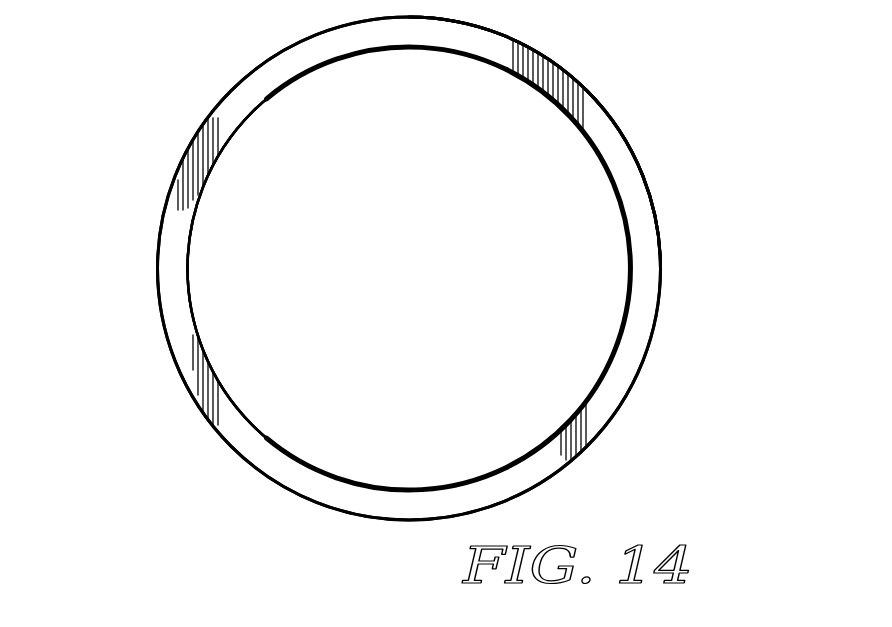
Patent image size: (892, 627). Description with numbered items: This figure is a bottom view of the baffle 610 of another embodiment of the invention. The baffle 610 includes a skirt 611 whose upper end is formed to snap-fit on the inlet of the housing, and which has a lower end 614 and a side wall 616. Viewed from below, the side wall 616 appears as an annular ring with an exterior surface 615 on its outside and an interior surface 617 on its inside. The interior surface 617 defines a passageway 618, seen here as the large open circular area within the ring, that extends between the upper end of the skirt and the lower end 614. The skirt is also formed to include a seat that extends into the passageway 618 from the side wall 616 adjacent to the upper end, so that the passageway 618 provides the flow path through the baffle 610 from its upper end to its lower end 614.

The baffle 610 is at (158, 190).
The skirt 611 is at (193, 408).
The lower end 614 is at (648, 350).
The exterior surface 615 is at (642, 175).
The side wall 616 is at (655, 210).
The interior surface 617 is at (618, 205).
The passageway 618 is at (550, 185).